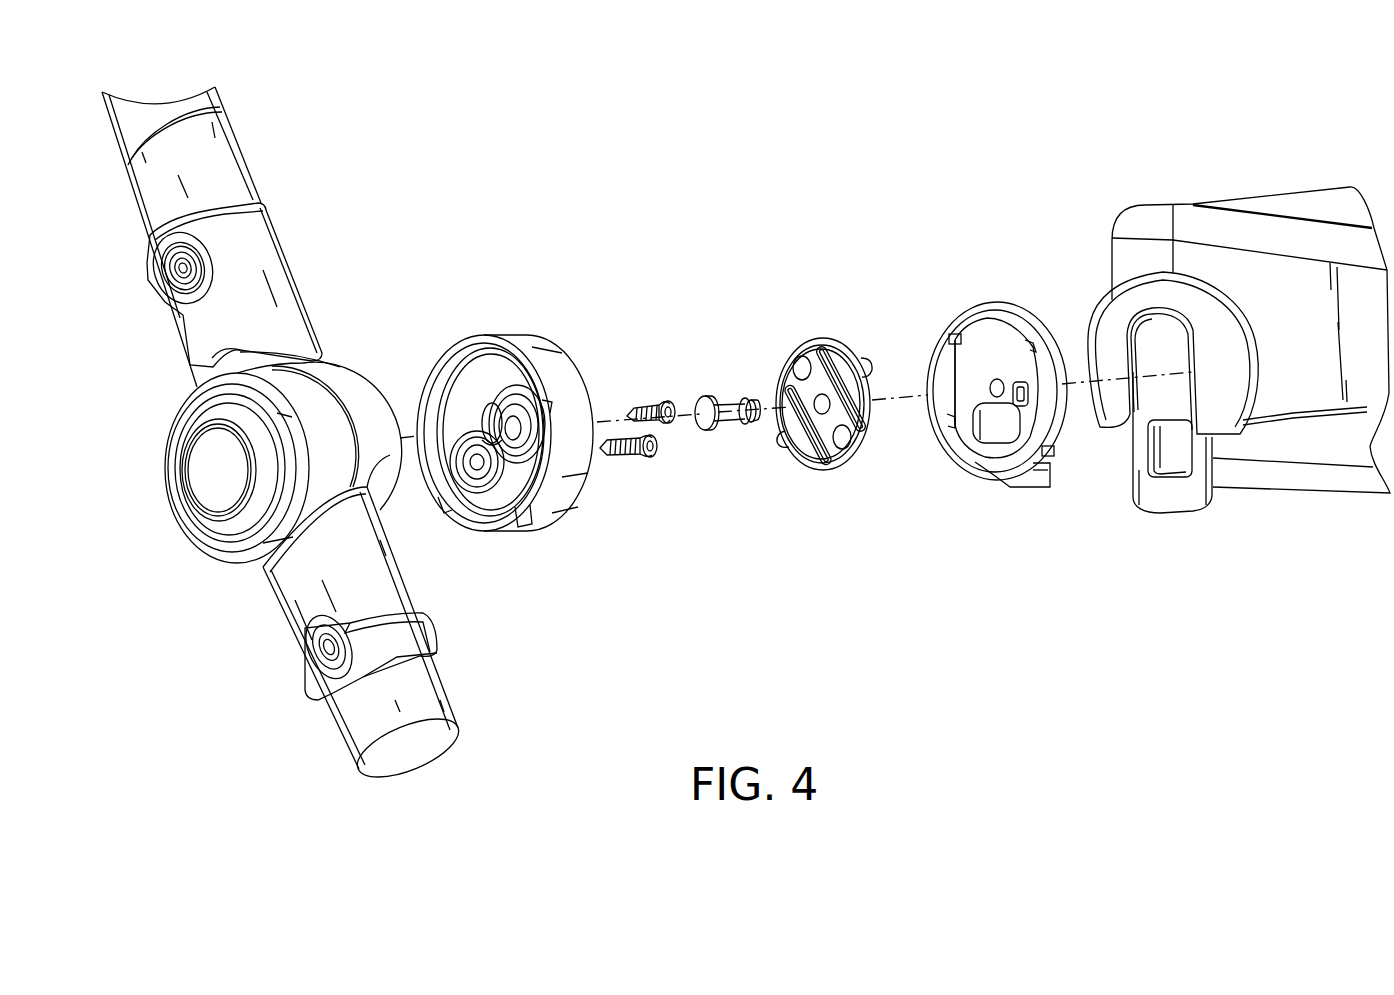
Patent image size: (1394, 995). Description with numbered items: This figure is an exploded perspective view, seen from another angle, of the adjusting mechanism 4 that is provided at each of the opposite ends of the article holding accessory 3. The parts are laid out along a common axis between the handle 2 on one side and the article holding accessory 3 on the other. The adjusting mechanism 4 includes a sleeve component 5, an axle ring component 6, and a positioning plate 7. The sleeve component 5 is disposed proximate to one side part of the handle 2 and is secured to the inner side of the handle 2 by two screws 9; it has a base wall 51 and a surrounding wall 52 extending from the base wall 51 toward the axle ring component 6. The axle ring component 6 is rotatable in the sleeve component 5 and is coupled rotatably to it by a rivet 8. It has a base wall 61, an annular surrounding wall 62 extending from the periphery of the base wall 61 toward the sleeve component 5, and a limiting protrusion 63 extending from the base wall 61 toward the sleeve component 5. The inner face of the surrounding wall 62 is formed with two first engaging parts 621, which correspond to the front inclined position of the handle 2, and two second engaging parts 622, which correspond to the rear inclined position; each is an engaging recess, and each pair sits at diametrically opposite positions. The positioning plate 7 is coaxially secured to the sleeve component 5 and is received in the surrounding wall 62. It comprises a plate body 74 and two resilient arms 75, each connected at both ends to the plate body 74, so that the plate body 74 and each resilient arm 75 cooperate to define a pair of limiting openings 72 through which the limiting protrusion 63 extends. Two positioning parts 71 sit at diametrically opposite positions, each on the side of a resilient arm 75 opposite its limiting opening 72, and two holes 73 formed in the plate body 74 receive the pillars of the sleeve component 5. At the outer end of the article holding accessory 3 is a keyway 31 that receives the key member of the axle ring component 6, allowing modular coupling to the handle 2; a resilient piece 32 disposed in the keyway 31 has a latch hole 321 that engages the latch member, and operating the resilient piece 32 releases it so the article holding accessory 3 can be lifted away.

The handle 2 is at (263, 258).
The article holding accessory 3 is at (1163, 212).
The keyway 31 is at (1125, 330).
The resilient piece 32 is at (1195, 494).
The latch hole 321 is at (1157, 464).
The adjusting mechanism 4 is at (675, 256).
The sleeve component 5 is at (507, 564).
The base wall 51 is at (460, 383).
The surrounding wall 52 is at (515, 333).
The axle ring component 6 is at (1041, 509).
The base wall 61 is at (990, 347).
The annular surrounding wall 62 is at (965, 320).
The first engaging part 621 is at (1030, 347).
The second engaging part 622 is at (957, 338).
The limiting protrusion 63 is at (1025, 397).
The positioning plate 7 is at (820, 486).
The positioning part 71 is at (866, 364).
The limiting opening 72 is at (830, 344).
The hole 73 is at (804, 367).
The plate body 74 is at (860, 415).
The resilient arm 75 is at (868, 400).
The rivet 8 is at (700, 410).
The screw 9 is at (645, 406).